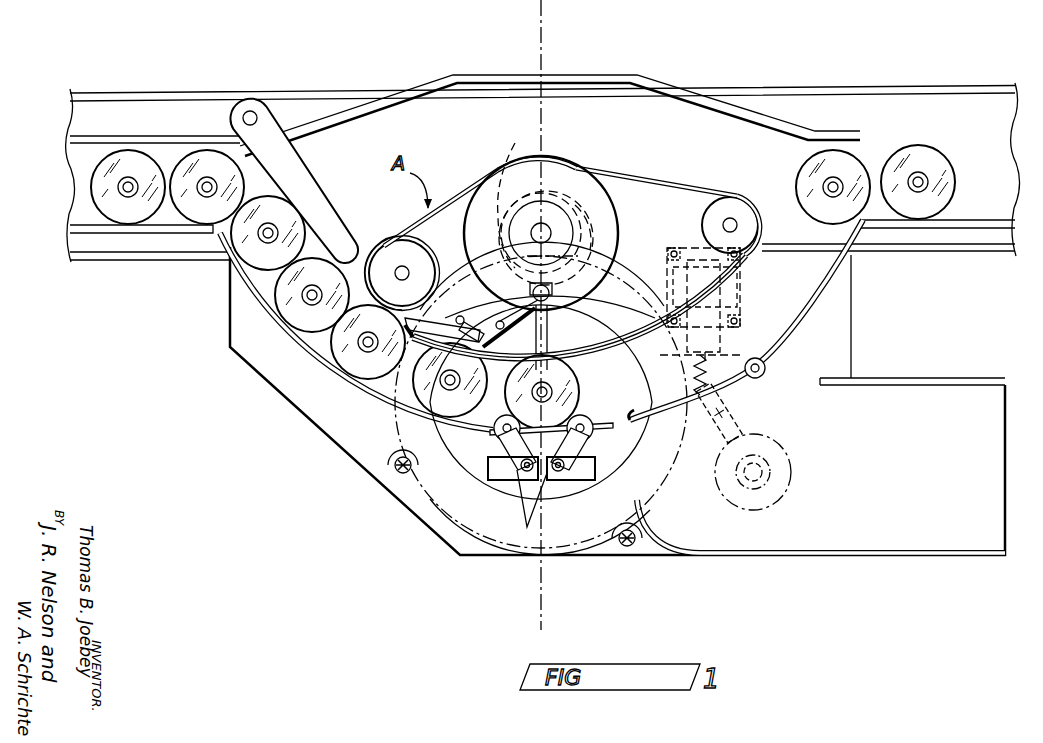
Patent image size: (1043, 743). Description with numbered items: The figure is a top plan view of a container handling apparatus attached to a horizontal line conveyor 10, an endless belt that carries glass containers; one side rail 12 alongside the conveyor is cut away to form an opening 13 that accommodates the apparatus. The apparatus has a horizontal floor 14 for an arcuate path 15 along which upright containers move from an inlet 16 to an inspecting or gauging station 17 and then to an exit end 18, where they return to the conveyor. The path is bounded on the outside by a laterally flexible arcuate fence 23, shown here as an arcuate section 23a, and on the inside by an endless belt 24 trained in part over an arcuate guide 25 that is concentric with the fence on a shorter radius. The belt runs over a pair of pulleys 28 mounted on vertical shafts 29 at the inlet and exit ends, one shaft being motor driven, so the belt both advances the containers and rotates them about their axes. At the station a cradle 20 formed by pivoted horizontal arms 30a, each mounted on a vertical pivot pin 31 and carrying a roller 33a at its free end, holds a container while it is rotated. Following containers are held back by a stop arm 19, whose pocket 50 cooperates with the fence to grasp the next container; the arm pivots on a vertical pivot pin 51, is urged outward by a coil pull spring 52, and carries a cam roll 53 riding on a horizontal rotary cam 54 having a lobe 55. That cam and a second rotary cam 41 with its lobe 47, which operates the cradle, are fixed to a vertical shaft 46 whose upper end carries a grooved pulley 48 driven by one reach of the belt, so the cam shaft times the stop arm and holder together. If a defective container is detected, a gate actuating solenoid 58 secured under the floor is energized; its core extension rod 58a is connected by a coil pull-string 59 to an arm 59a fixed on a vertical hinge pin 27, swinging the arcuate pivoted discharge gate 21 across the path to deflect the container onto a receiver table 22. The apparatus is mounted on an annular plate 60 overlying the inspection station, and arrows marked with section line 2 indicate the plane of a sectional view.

The section line 2- 2 is at (628, 616).
The horizontal line conveyor 10 is at (86, 191).
The side rail 12 is at (86, 241).
The opening 13 is at (214, 241).
The horizontal floor 14 is at (803, 283).
The arcuate path 15 is at (803, 272).
The inlet 16 is at (258, 187).
The inspecting or gauging station 17 is at (478, 457).
The exit end 18 is at (832, 197).
The stop arm 19 is at (422, 337).
The cradle 20 is at (582, 466).
The container discharge gate 21 is at (638, 476).
The receiver table 22 is at (928, 474).
The laterally flexible fence 23 is at (814, 320).
The arcuate fence section 23a is at (310, 358).
The endless belt 24 is at (650, 185).
The arcuate guide 25 is at (585, 346).
The vertical hinge pin 27 is at (766, 367).
The pulley 28 is at (400, 260).
The vertical shaft 29 is at (405, 270).
The pivoted horizontal arm 30a is at (527, 470).
The vertical pivot pin 31 is at (526, 507).
The roller 33a is at (498, 436).
The rotary cam 41 is at (518, 148).
The vertical shaft 46 is at (537, 230).
The lobe 47 is at (600, 250).
The grooved pulley 48 is at (552, 165).
The container accommodating pocket 50 is at (403, 392).
The vertical pivot pin 51 is at (532, 292).
The coil pull spring 52 is at (505, 328).
The cam roll 53 is at (586, 297).
The horizontal rotary cam 54 is at (583, 210).
The lobe 55 is at (600, 228).
The gate actuating solenoid 58 is at (742, 300).
The core extension rod 58a is at (735, 336).
The coil pull-string 59 is at (696, 378).
The arm 59a is at (745, 386).
The annular plate 60 is at (436, 516).